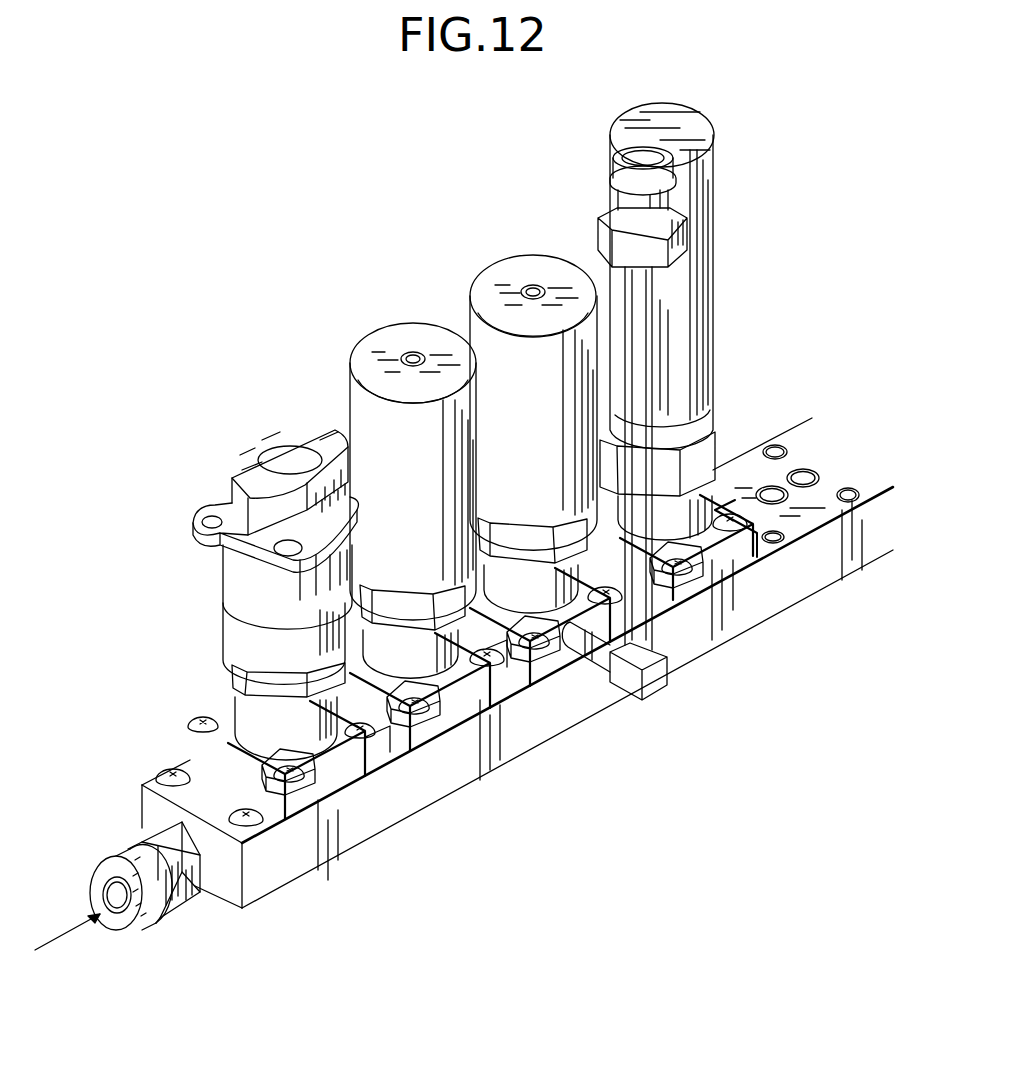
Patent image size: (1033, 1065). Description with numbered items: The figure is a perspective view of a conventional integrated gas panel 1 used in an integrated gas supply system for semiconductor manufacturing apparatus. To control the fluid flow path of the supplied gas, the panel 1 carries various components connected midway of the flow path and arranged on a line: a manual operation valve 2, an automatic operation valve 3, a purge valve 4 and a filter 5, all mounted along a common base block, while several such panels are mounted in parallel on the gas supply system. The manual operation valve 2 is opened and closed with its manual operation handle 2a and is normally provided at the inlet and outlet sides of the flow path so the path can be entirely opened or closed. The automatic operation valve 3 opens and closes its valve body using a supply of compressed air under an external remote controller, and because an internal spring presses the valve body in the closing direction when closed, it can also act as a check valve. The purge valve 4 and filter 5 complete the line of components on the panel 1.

The integrated gas panel 1 is at (540, 773).
The manual operation valve 2 is at (237, 588).
The manual operation handle 2a is at (243, 477).
The automatic operation valve 3 is at (387, 340).
The purge valve 4 is at (514, 280).
The filter 5 is at (692, 132).